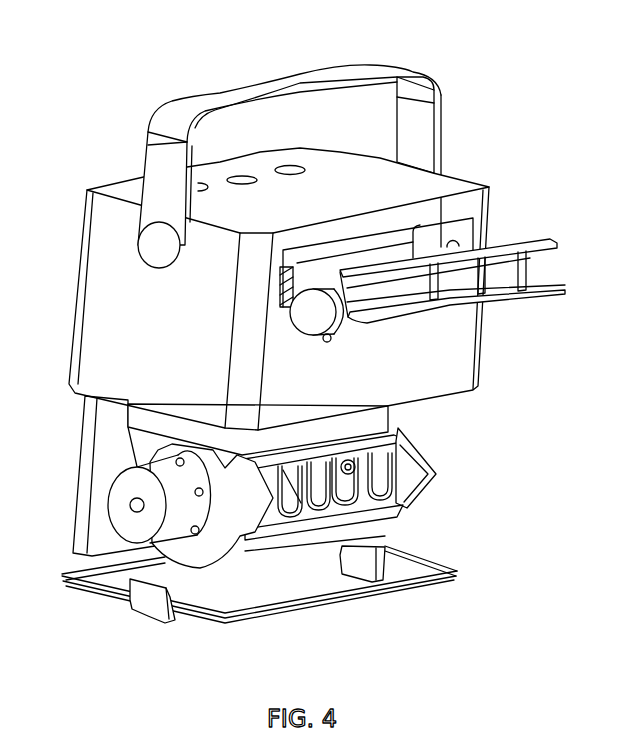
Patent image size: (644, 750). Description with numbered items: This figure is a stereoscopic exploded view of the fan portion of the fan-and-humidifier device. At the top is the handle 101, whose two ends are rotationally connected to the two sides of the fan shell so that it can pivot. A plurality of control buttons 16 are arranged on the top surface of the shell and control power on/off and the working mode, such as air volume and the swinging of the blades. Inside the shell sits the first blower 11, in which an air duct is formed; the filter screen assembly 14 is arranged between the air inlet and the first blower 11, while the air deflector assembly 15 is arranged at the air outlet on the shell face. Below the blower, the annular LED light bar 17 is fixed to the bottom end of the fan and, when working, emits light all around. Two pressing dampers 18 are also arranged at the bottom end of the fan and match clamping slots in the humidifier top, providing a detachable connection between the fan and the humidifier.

The handle 101 is at (360, 68).
The control buttons 16 is at (242, 176).
The air deflector assembly 15 is at (528, 290).
The filter screen assembly 14 is at (85, 465).
The first blower 11 is at (403, 470).
The LED light bar 17 is at (75, 585).
The pressing dampers 18 is at (153, 622).